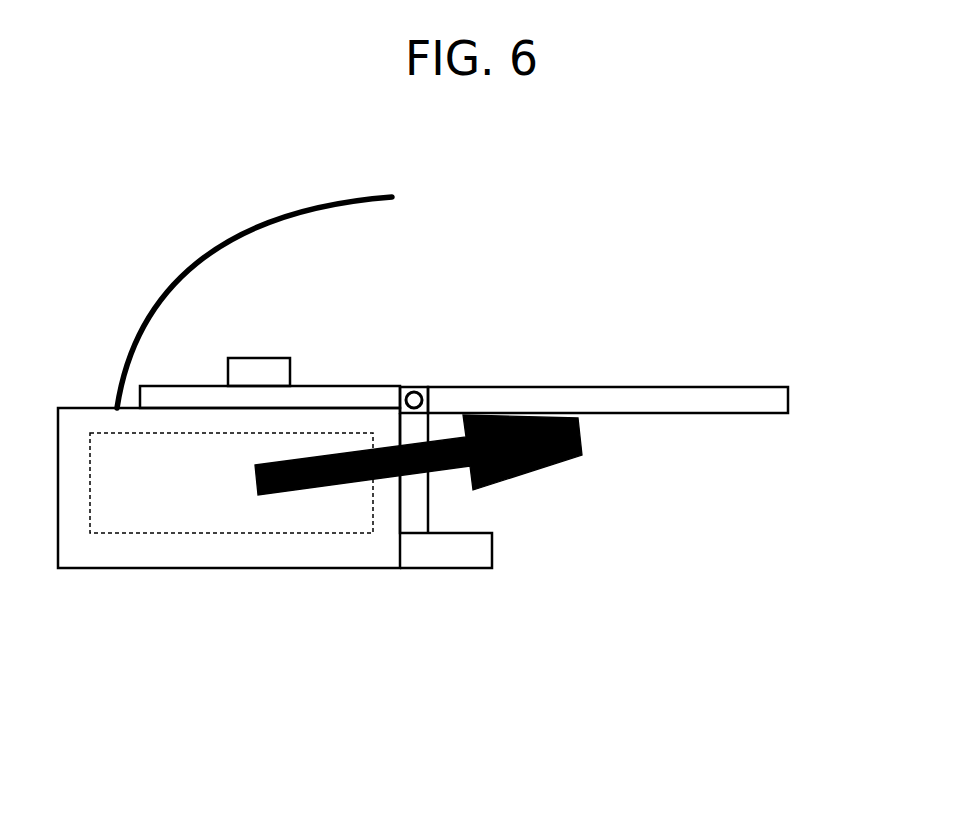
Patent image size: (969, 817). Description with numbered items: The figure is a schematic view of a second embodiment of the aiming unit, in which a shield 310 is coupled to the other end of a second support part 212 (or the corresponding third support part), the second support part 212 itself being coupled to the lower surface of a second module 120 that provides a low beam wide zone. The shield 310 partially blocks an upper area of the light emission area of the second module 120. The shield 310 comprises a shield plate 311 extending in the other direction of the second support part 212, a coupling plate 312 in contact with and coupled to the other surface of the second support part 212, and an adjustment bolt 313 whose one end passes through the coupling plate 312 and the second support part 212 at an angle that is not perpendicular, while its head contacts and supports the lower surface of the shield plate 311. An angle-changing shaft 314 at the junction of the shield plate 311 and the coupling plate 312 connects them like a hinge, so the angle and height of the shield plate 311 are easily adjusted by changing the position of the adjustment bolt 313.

The second module 120 is at (313, 387).
The second support part 212 is at (293, 568).
The shield 310 is at (547, 406).
The shield plate 311 is at (695, 415).
The coupling plate 312 is at (428, 507).
The adjustment bolt 313 is at (560, 463).
The angle-changing shaft 314 is at (435, 387).